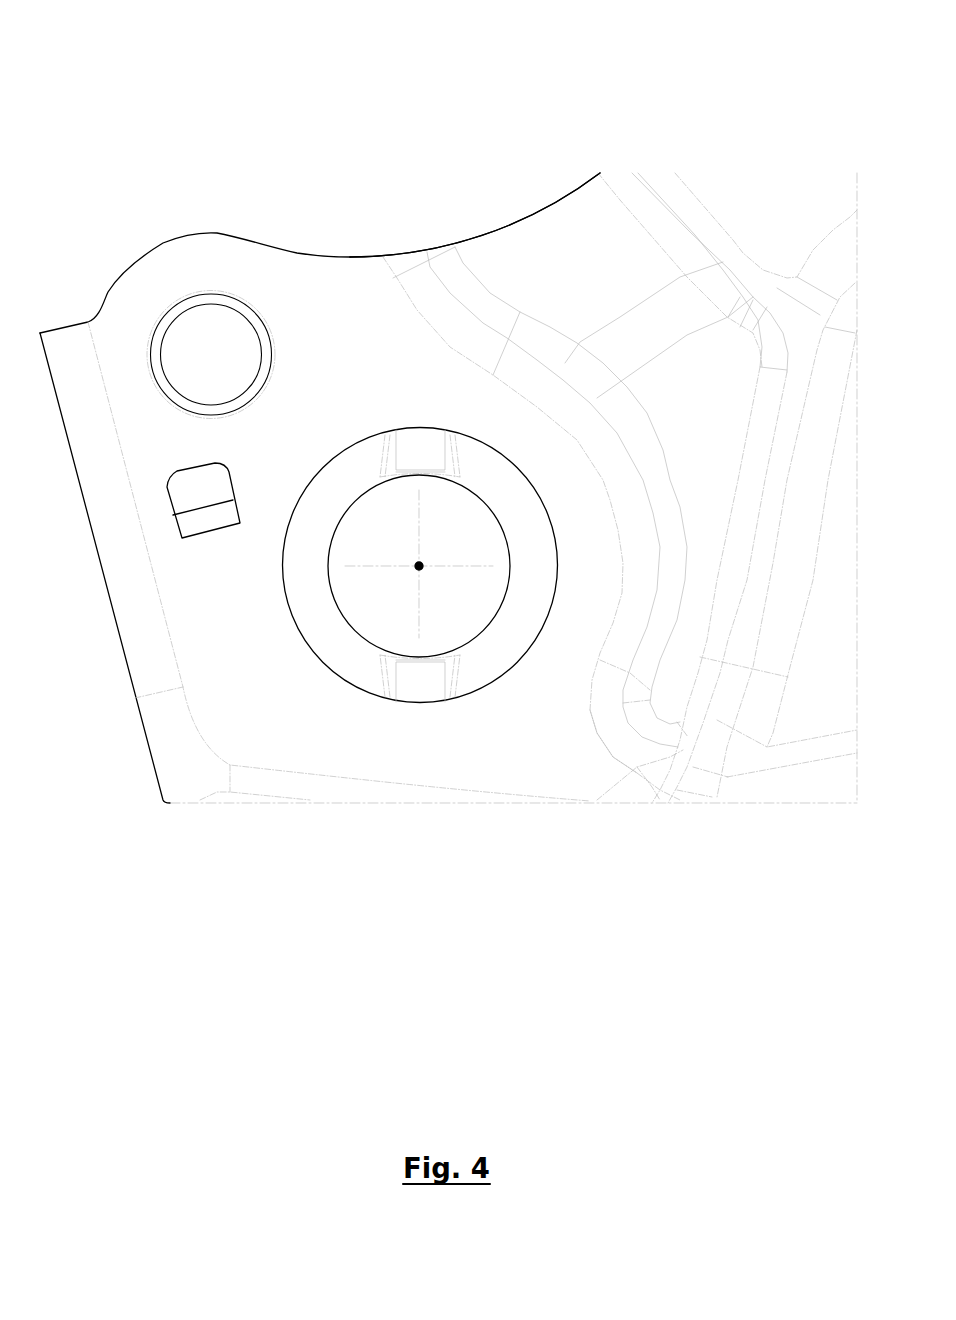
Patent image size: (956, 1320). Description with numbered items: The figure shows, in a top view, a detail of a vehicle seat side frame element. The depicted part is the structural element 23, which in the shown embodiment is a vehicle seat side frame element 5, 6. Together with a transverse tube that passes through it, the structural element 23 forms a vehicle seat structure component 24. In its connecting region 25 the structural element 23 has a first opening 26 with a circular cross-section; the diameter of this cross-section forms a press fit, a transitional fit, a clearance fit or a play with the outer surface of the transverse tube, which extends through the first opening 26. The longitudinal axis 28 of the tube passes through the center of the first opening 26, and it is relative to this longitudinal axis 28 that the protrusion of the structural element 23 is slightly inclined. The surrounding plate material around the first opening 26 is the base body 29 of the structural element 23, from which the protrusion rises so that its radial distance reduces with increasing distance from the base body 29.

The vehicle seat side frame element 5 is at (448, 409).
The vehicle seat side frame element 6 is at (448, 409).
The structural element 23 is at (303, 297).
The vehicle seat structure component 24 is at (465, 161).
The connecting region 25 is at (482, 675).
The first opening 26 is at (470, 543).
The longitudinal axis 28 is at (419, 566).
The base body 29 is at (542, 747).